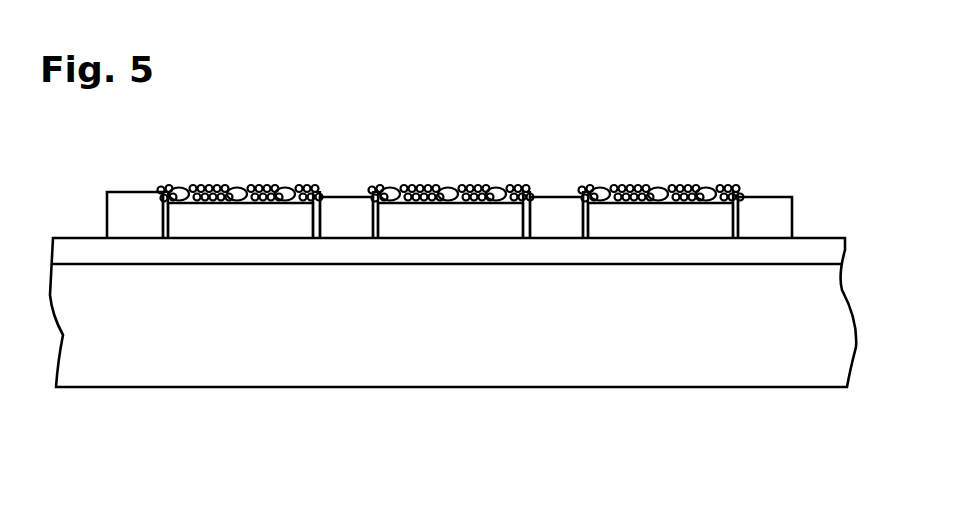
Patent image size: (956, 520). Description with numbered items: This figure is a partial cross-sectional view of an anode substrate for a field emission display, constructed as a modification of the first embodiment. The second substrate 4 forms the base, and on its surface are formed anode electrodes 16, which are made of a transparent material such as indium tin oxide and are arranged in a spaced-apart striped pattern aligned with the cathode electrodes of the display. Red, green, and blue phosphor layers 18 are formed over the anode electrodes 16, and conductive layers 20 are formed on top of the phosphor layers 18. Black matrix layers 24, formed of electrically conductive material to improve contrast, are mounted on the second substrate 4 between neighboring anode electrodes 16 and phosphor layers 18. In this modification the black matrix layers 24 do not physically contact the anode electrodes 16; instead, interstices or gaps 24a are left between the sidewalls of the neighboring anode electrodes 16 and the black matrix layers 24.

The second substrate 4 is at (673, 372).
The anode electrodes 16 is at (443, 217).
The phosphor layers 18 is at (388, 198).
The conductive layers 20 is at (533, 192).
The black matrix layers 24 is at (352, 203).
The gaps 24a is at (313, 217).